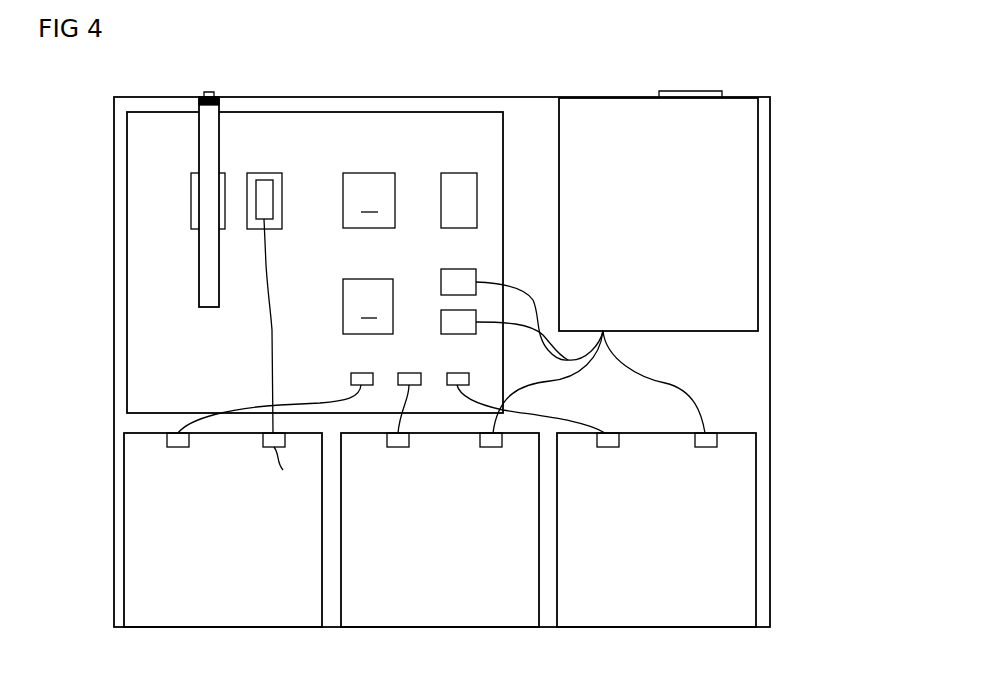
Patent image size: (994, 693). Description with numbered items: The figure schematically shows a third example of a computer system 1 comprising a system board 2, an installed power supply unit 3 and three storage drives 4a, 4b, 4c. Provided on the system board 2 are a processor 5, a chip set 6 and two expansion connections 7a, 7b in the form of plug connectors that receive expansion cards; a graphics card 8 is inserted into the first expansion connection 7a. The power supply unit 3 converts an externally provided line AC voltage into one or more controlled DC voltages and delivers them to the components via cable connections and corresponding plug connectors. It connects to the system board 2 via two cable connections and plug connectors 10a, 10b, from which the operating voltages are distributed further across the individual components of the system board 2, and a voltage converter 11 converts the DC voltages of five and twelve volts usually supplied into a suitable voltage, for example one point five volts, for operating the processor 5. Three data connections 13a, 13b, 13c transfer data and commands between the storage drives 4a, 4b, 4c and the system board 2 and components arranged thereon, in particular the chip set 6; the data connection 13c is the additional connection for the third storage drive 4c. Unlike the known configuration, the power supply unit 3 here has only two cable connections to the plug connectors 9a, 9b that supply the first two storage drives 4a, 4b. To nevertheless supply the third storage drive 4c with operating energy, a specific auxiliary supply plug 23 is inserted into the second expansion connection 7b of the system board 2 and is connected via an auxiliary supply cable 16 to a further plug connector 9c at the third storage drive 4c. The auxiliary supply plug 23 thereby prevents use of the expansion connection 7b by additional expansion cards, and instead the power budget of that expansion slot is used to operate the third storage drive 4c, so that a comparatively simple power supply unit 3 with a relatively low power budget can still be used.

The computer system 1 is at (789, 33).
The system board 2 is at (430, 128).
The power supply unit 3 is at (746, 278).
The storage drive 4a is at (660, 618).
The storage drive 4b is at (435, 618).
The storage drive 4c is at (225, 618).
The processor 5 is at (369, 200).
The chip set 6 is at (368, 306).
The expansion connection 7a is at (191, 186).
The expansion connection 7b is at (282, 183).
The graphics card 8 is at (219, 134).
The plug connector 9a is at (706, 432).
The plug connector 9b is at (491, 447).
The plug connector 9c is at (289, 466).
The plug connector 10a is at (441, 323).
The plug connector 10b is at (441, 283).
The voltage converter 11 is at (441, 185).
The data connection 13a is at (457, 373).
The data connection 13b is at (409, 373).
The data connection 13c is at (362, 373).
The auxiliary supply cable 16 is at (271, 300).
The auxiliary supply plug 23 is at (273, 200).